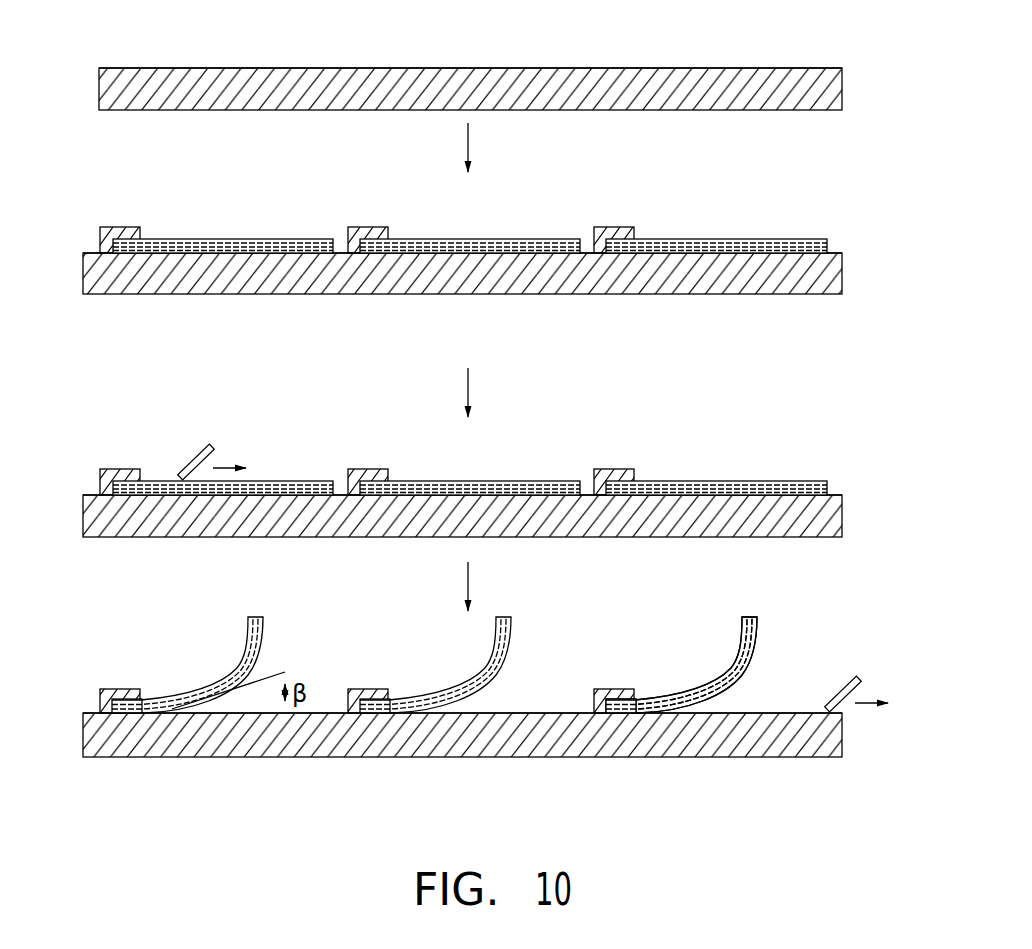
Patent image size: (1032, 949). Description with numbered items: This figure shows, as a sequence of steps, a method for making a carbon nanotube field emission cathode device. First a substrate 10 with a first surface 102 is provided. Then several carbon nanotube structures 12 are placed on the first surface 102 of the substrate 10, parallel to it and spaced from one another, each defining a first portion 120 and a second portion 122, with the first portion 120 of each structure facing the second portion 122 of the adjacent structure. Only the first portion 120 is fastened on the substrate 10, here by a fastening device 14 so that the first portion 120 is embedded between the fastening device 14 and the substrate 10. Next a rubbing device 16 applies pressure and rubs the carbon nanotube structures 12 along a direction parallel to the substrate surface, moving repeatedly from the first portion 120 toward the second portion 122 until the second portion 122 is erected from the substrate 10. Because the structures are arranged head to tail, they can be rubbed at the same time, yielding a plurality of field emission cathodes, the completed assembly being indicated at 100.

The substrate 10 is at (745, 88).
The first surface 102 is at (222, 68).
The carbon nanotube structure 12 is at (765, 248).
The first portion 120 is at (112, 244).
The second portion 122 is at (323, 240).
The fastening device 14 is at (120, 227).
The rubbing device 16 is at (190, 458).
The carbon nanotube structure 100 is at (610, 600).